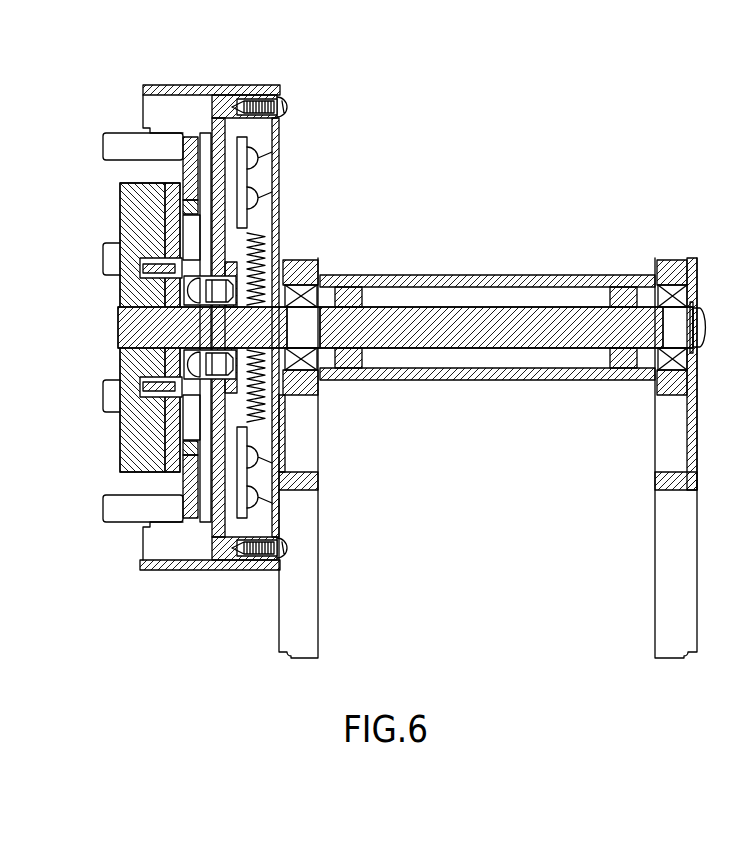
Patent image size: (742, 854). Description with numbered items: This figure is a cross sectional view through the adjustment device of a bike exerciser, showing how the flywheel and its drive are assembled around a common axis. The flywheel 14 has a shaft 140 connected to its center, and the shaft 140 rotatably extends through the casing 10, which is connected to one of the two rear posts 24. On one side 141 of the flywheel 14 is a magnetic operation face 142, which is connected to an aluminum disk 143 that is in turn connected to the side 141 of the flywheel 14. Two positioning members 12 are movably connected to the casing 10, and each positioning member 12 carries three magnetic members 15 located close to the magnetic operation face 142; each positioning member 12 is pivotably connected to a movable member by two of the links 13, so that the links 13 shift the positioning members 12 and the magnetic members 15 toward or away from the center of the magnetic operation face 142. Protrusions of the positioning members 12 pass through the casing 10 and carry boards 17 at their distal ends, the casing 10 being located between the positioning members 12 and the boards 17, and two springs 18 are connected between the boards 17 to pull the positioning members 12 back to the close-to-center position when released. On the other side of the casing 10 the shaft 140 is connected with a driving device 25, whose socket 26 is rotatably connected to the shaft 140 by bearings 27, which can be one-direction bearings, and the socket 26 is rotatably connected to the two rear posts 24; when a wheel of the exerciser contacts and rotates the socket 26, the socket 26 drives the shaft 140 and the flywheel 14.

The casing 10 is at (250, 88).
The positioning members 12 is at (190, 137).
The links 13 is at (184, 270).
The flywheel 14 is at (118, 215).
The side of the flywheel 141 is at (163, 242).
The magnetic operation face 142 is at (180, 216).
The aluminum disk 143 is at (196, 212).
The magnetic members 15 is at (183, 147).
The boards 17 is at (247, 180).
The springs 18 is at (262, 372).
The rear posts 24 is at (313, 590).
The driving device 25 is at (491, 248).
The socket 26 is at (533, 276).
The bearings 27 is at (313, 264).
The shaft 140 is at (120, 322).